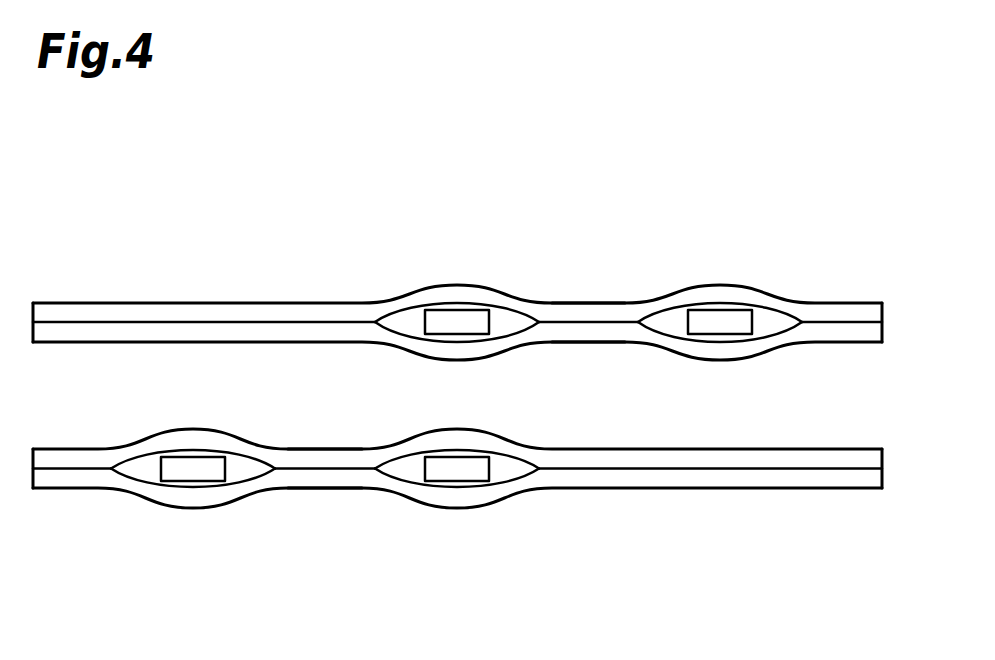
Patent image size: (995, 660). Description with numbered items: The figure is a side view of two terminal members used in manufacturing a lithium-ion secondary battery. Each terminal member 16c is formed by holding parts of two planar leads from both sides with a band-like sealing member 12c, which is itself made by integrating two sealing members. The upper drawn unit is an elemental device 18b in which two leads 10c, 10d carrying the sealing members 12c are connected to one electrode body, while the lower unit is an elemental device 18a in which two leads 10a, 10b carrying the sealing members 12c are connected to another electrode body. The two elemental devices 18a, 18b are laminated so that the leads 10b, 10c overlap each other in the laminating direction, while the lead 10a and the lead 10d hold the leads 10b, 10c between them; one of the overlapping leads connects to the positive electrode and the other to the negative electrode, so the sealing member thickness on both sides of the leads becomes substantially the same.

The elemental device 18a is at (457, 514).
The elemental device 18b is at (457, 287).
The lead 10a is at (185, 472).
The lead 10b is at (447, 472).
The lead 10c is at (461, 322).
The lead 10d is at (722, 322).
The sealing member 12c is at (612, 335).
The terminal member 16c is at (753, 225).